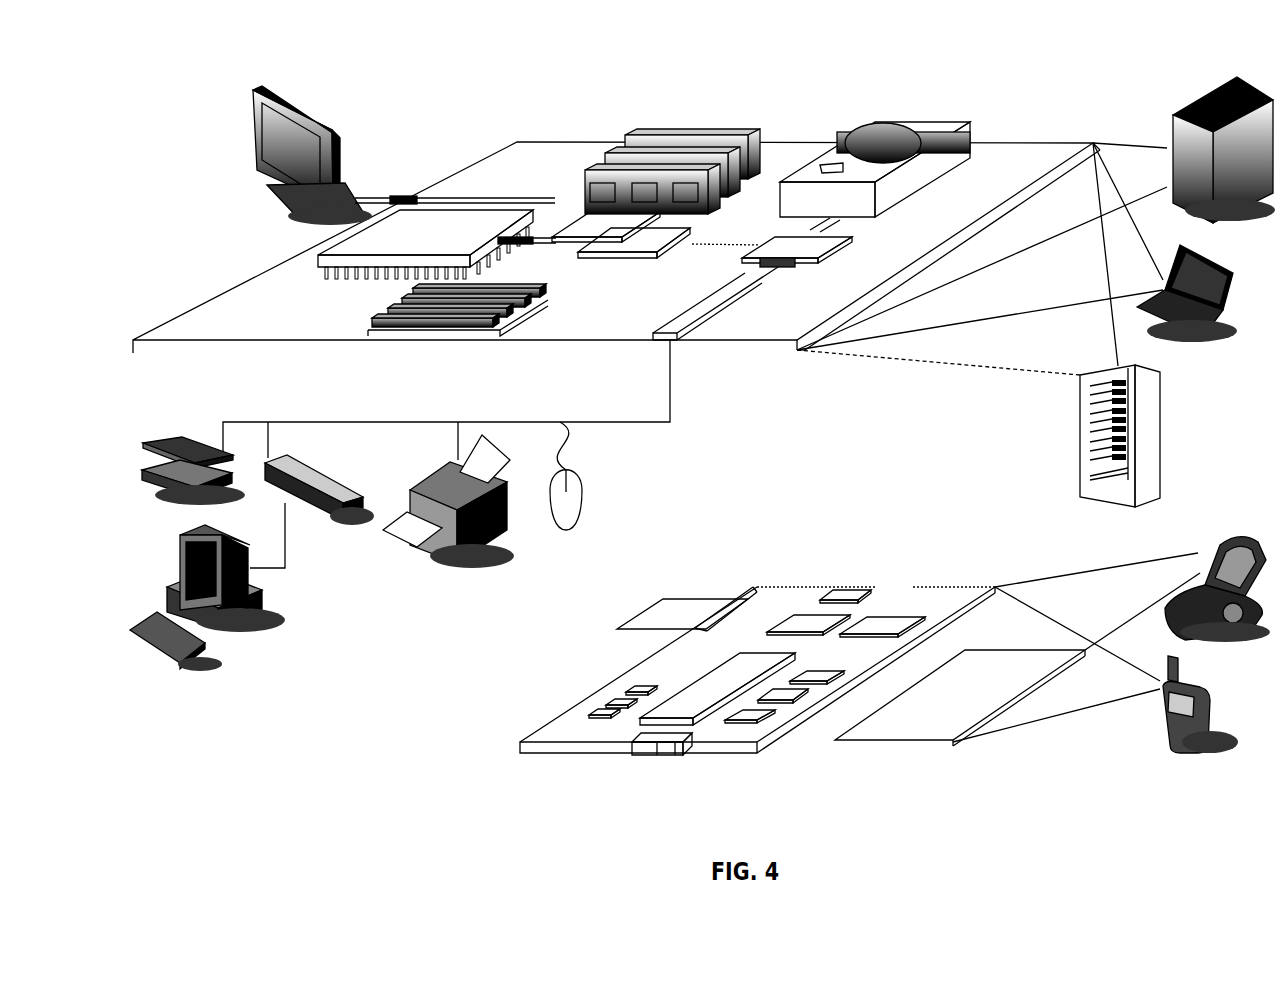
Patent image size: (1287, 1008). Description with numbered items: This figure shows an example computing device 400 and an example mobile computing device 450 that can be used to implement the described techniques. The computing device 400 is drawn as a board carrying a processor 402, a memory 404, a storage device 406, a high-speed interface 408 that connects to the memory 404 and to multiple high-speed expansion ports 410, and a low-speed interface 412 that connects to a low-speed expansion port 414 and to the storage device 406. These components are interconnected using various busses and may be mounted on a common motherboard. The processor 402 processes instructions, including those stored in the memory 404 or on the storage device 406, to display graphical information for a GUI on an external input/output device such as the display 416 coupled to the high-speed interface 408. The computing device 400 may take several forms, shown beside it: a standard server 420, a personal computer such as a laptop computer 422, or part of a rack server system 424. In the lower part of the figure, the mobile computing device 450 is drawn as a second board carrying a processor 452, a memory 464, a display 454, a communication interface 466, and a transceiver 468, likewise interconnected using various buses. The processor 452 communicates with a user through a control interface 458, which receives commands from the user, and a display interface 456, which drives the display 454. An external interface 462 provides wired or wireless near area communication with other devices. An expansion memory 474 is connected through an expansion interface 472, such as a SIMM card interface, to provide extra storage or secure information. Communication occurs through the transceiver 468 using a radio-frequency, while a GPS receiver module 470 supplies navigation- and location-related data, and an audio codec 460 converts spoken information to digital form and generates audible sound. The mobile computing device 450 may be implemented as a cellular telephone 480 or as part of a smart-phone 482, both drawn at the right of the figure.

The computing device 400 is at (440, 108).
The processor 402 is at (390, 244).
The memory 404 is at (672, 155).
The storage device 406 is at (875, 158).
The high-speed interface 408 is at (602, 175).
The high-speed expansion ports 410 is at (371, 300).
The low-speed interface 412 is at (797, 185).
The low-speed expansion port 414 is at (715, 359).
The display 416 is at (380, 139).
The standard server 420 is at (1197, 150).
The laptop computer 422 is at (1209, 287).
The rack server system 424 is at (1082, 433).
The mobile computing device 450 is at (816, 678).
The processor 452 is at (717, 718).
The display 454 is at (960, 715).
The display interface 456 is at (767, 764).
The control interface 458 is at (800, 742).
The audio codec 460 is at (826, 719).
The external interface 462 is at (662, 769).
The memory 464 is at (607, 675).
The communication interface 466 is at (805, 591).
The transceiver 468 is at (882, 593).
The GPS receiver module 470 is at (841, 561).
The expansion interface 472 is at (718, 583).
The expansion memory 474 is at (678, 598).
The cellular telephone 480 is at (1217, 575).
The smart-phone 482 is at (1150, 740).